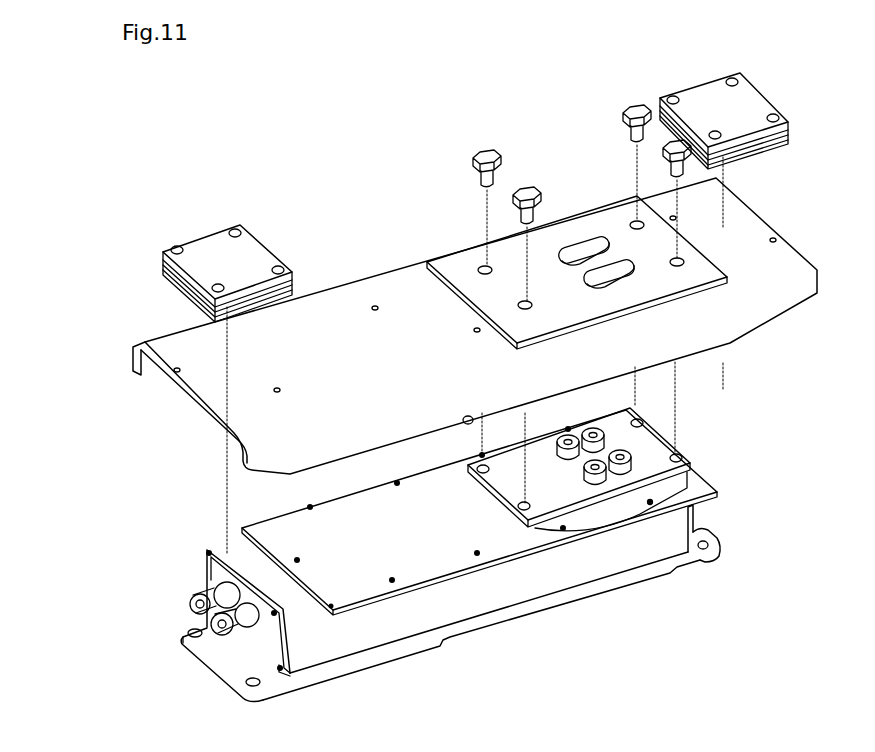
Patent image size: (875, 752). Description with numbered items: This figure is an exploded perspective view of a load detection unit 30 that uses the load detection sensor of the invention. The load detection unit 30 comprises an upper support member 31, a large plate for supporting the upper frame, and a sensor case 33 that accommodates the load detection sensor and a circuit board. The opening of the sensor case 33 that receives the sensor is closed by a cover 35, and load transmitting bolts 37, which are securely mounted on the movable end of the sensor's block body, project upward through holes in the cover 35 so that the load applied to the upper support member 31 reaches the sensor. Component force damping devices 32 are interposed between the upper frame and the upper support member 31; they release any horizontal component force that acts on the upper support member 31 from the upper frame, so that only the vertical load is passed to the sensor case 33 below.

The load detection unit 30 is at (264, 116).
The upper support member 31 is at (357, 283).
The component force damping device 32 is at (197, 238).
The sensor case 33 is at (507, 620).
The cover 35 is at (283, 512).
The load transmitting bolt 37 is at (636, 433).